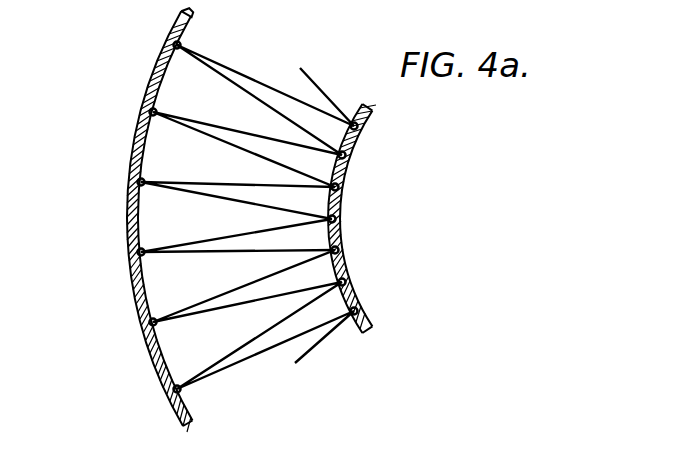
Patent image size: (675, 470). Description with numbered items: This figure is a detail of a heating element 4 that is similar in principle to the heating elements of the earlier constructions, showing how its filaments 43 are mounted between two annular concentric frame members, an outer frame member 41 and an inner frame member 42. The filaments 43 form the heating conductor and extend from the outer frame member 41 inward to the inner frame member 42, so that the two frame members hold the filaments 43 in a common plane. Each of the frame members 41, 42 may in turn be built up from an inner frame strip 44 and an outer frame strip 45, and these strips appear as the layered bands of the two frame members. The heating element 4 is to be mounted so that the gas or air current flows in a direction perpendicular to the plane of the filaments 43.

The heating element 4 is at (252, 220).
The outer frame member 41 is at (101, 289).
The inner frame member 42 is at (359, 235).
The filaments 43 is at (238, 366).
The inner frame strip 44 is at (140, 218).
The outer frame strip 45 is at (150, 112).